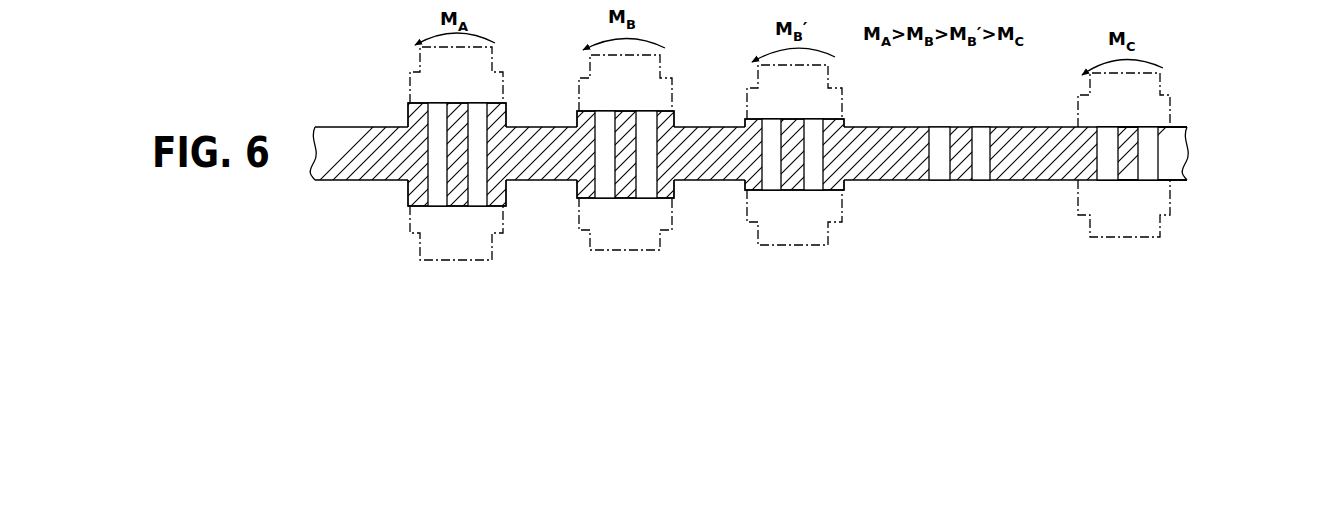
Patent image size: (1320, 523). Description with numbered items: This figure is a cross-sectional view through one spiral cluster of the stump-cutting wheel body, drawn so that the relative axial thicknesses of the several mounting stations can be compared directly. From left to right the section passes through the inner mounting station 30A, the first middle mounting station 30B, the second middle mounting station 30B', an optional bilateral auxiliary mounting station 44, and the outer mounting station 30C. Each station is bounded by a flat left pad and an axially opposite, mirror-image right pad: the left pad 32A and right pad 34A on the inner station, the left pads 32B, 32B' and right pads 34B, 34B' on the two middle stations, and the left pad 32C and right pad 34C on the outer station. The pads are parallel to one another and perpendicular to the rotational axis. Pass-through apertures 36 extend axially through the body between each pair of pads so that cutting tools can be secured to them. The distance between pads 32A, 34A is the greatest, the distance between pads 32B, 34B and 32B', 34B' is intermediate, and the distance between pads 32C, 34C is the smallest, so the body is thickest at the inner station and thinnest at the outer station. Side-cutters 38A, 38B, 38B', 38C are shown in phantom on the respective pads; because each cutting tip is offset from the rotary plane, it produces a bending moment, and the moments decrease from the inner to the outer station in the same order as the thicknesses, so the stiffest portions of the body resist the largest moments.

The inner mounting station 30A is at (415, 98).
The left pad of inner mounting station 32A is at (456, 207).
The right pad of inner mounting station 34A is at (452, 102).
The apertures 36 is at (483, 156).
The side-cutter at inner mounting station 38A is at (492, 266).
The first middle mounting station 30B is at (644, 110).
The left pad of first middle mounting station 32B is at (650, 216).
The right pad of first middle mounting station 34B is at (603, 86).
The side-cutter at first middle mounting station 38B is at (635, 172).
The second middle mounting station 30B' is at (829, 128).
The left pad of second middle mounting station 32B' is at (820, 214).
The right pad of second middle mounting station 34B' is at (772, 89).
The side-cutter at second middle mounting station 38B' is at (807, 176).
The outer mounting station 30C is at (1169, 123).
The left pad of outer mounting station 32C is at (1126, 181).
The right pad of outer mounting station 34C is at (1128, 126).
The side-cutter at outer mounting station 38C is at (1111, 243).
The bilateral auxiliary mounting station 44 is at (1008, 186).